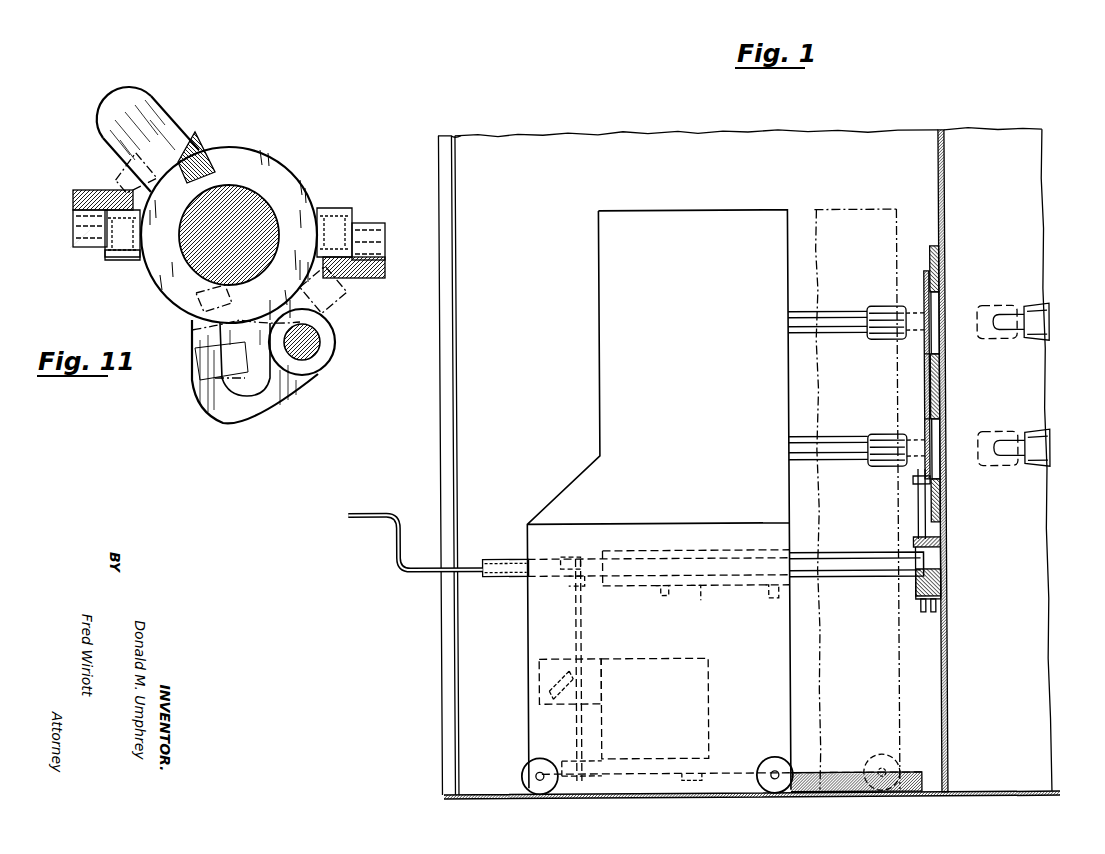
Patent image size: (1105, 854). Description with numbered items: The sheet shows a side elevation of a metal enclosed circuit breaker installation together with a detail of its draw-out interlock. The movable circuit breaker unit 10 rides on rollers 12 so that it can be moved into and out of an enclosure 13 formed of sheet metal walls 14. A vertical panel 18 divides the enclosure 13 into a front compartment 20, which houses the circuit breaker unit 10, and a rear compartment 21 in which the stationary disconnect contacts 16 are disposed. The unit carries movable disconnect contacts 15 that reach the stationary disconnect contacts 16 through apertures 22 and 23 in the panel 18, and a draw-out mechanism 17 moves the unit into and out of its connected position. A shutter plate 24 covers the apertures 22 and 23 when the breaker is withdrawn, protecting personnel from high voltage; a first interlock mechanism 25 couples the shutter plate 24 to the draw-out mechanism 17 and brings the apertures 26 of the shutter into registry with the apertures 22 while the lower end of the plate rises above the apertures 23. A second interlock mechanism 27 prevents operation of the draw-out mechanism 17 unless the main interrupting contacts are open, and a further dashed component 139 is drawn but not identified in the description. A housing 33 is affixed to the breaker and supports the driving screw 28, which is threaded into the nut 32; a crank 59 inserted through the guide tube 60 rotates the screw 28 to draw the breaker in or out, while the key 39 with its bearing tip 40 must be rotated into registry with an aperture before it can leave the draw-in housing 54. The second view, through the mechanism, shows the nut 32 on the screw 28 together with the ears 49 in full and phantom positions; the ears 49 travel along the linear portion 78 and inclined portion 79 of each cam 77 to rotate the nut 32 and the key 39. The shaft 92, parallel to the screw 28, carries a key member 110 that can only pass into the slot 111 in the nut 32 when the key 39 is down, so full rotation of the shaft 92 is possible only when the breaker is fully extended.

In FIG. 1, the movable circuit breaker unit 10 is at (701, 448).
In FIG. 1, the rollers 12 is at (522, 768).
In FIG. 1, the enclosure 13 is at (632, 126).
In FIG. 1, the sheet metal walls 14 is at (560, 150).
In FIG. 1, the movable disconnect contacts 15 is at (884, 307).
In FIG. 1, the stationary disconnect contacts 16 is at (1010, 316).
In FIG. 1, the draw-out mechanism 17 is at (851, 601).
In FIG. 1, the vertical panel 18 is at (939, 170).
In FIG. 1, the front compartment 20 is at (806, 174).
In FIG. 1, the rear compartment 21 is at (1014, 176).
In FIG. 1, the apertures 22 is at (940, 302).
In FIG. 1, the apertures 23 is at (940, 422).
In FIG. 1, the shutter plate 24 is at (926, 300).
In FIG. 1, the first interlock mechanism 25 is at (893, 518).
In FIG. 1, the apertures 26 is at (925, 380).
In FIG. 1, the second interlock mechanism 27 is at (582, 648).
In FIG. 1, the housing 33 is at (685, 545).
In FIG. 1, the draw-in housing 54 is at (928, 612).
In FIG. 1, the crank 59 is at (395, 512).
In FIG. 1, the guide tube 60 is at (494, 560).
In FIG. 1, the member 139 is at (712, 678).
In FIG. 11, the driving screw 28 is at (205, 243).
In FIG. 11, the nut 32 is at (160, 292).
In FIG. 11, the key 39 is at (182, 135).
In FIG. 11, the bearing tip 40 is at (175, 125).
In FIG. 11, the ears 49 is at (120, 172).
In FIG. 11, the cam 77 is at (83, 248).
In FIG. 11, the linear portion 78 is at (75, 199).
In FIG. 11, the inclined portion 79 is at (85, 226).
In FIG. 11, the shaft 92 is at (318, 350).
In FIG. 11, the key member 110 is at (200, 342).
In FIG. 11, the slot 111 is at (228, 152).